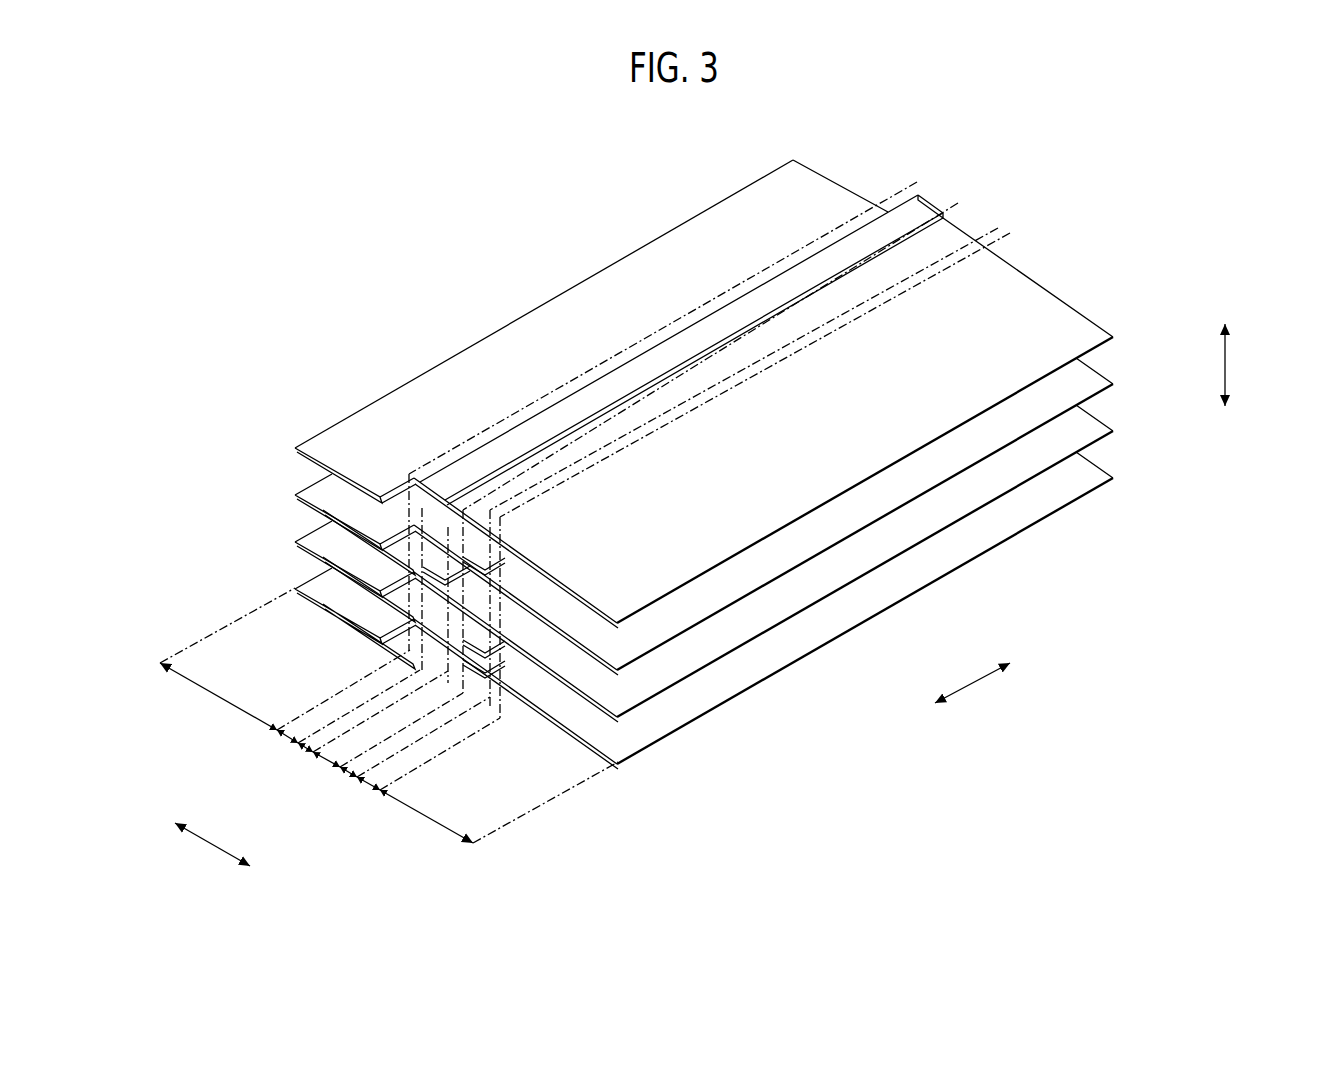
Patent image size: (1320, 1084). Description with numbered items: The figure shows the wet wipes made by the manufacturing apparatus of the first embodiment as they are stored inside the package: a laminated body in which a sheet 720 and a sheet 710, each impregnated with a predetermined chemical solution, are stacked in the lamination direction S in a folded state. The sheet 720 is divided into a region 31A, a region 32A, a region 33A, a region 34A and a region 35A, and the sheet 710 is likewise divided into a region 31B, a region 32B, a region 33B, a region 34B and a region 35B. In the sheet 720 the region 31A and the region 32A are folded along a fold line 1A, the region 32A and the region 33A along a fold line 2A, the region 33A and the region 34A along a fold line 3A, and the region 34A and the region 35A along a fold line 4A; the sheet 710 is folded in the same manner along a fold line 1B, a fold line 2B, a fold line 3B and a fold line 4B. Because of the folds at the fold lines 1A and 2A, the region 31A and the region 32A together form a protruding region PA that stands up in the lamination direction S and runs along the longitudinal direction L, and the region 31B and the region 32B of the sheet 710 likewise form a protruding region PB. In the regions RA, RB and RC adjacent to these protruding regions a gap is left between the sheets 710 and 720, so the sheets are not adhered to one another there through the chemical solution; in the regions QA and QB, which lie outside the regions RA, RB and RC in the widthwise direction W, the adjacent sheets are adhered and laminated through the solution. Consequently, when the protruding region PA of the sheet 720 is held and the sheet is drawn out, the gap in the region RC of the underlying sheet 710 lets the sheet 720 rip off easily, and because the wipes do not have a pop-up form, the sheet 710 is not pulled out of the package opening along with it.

The fold line 1A is at (712, 325).
The fold line 1B is at (505, 566).
The fold line 2A is at (397, 557).
The fold line 2B is at (385, 585).
The fold line 3A is at (930, 440).
The fold line 3B is at (1010, 444).
The fold line 4A is at (704, 394).
The fold line 4B is at (647, 516).
The region 31A is at (922, 198).
The region 31B is at (506, 551).
The region 32A is at (427, 477).
The region 32B is at (470, 596).
The region 33A is at (998, 291).
The region 33B is at (842, 518).
The region 34A is at (678, 252).
The region 34B is at (344, 506).
The region 35A is at (368, 488).
The region 35B is at (346, 606).
The sheet 710 is at (1112, 377).
The sheet 720 is at (734, 499).
The region QA is at (240, 708).
The region QB is at (440, 820).
The region RA is at (286, 740).
The region RB is at (372, 792).
The region RC is at (327, 762).
The protruding region PA is at (307, 749).
The protruding region PB is at (349, 780).
The lamination direction S is at (1238, 365).
The longitudinal direction L is at (972, 675).
The widthwise direction W is at (212, 838).